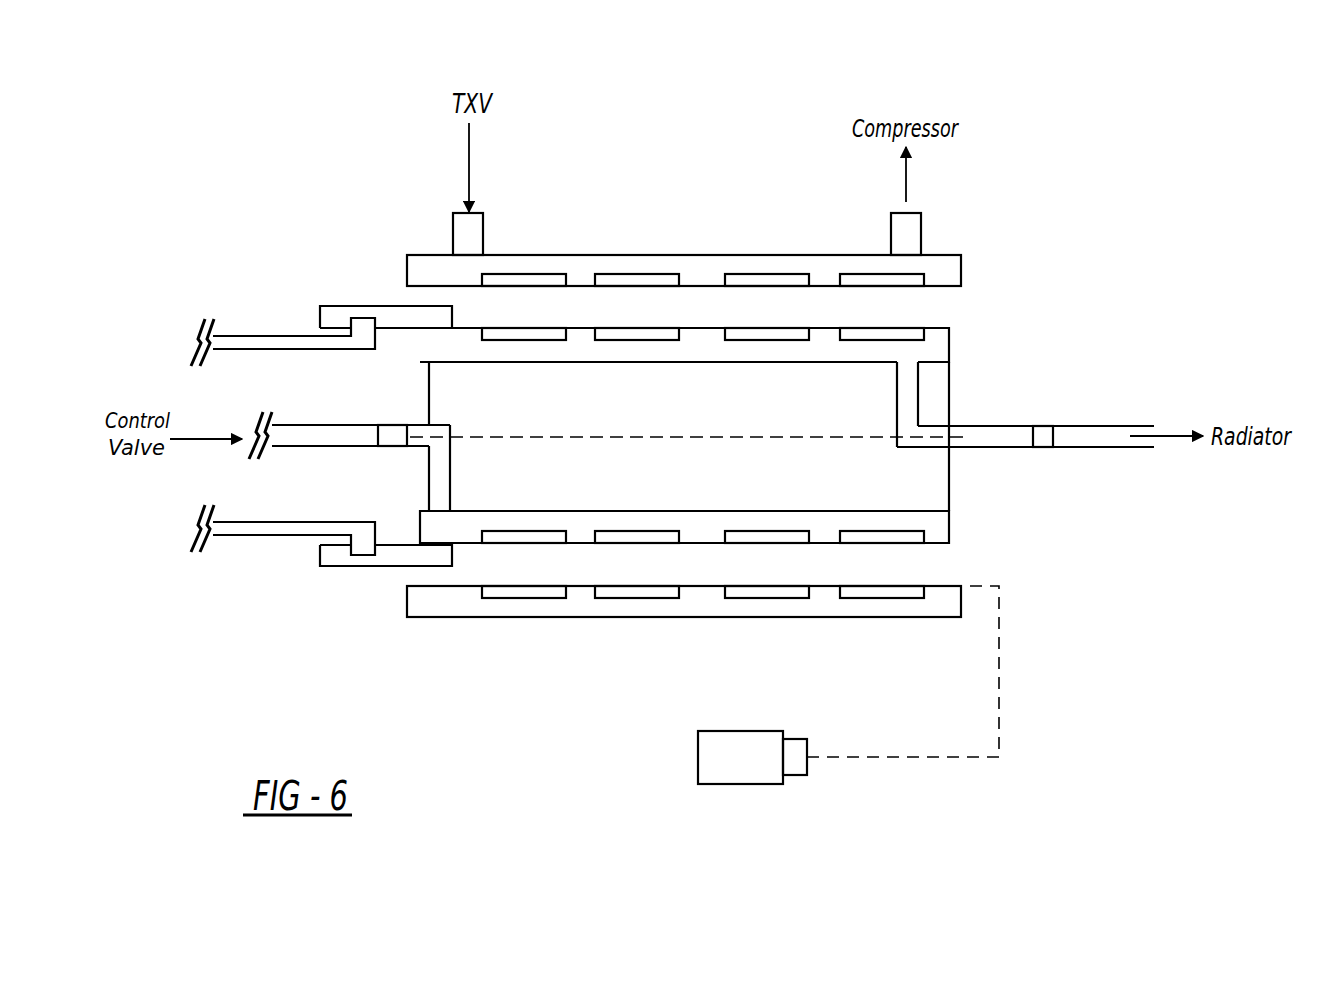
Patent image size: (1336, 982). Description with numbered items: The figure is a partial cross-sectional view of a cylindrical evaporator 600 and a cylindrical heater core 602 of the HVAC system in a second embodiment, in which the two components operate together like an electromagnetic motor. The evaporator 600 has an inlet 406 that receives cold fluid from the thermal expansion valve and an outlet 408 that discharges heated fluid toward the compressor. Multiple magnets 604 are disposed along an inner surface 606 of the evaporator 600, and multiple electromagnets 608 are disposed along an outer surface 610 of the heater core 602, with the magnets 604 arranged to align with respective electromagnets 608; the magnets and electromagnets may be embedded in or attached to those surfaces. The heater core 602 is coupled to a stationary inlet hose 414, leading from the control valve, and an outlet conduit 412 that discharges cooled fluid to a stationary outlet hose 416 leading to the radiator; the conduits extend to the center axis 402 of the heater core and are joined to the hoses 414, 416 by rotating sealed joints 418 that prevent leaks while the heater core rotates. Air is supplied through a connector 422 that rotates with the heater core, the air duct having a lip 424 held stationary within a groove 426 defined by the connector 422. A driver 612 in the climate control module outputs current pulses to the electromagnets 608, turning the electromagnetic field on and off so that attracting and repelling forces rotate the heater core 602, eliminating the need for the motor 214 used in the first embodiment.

The motor 214 is at (740, 784).
The center axis 402 is at (606, 436).
The inlet 406 is at (484, 231).
The outlet 408 is at (921, 228).
The outlet conduit 412 is at (918, 393).
The inlet hose 414 is at (342, 447).
The outlet hose 416 is at (1130, 426).
The rotating sealed joints 418 is at (1048, 427).
The connector 422 is at (323, 306).
The lip 424 is at (358, 558).
The groove 426 is at (386, 556).
The evaporator 600 is at (742, 255).
The heater core 602 is at (950, 527).
The magnets 604 is at (514, 278).
The inner surface 606 is at (449, 289).
The electromagnets 608 is at (518, 337).
The outer surface 610 is at (949, 328).
The driver 612 is at (797, 739).